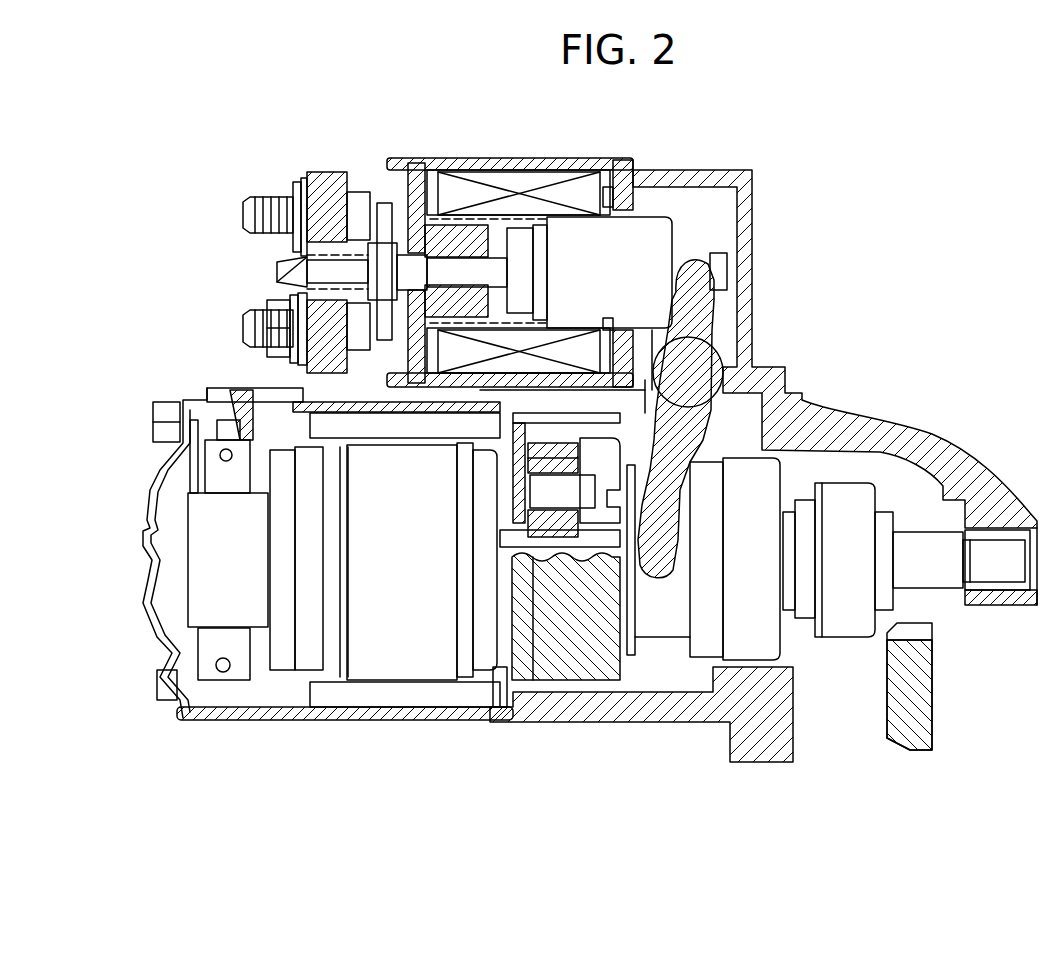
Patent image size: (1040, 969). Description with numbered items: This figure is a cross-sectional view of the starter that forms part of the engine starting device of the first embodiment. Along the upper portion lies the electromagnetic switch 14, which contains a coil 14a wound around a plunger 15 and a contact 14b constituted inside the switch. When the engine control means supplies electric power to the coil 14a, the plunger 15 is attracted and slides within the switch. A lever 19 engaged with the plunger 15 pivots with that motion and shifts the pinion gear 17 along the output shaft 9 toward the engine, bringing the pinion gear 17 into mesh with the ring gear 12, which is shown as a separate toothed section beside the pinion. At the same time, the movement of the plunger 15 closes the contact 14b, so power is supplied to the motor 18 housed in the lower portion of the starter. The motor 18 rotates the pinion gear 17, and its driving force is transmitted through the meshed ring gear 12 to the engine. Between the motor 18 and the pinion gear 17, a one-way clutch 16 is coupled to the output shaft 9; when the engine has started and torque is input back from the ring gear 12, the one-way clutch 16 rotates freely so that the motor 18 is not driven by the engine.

The output shaft 9 is at (927, 553).
The ring gear 12 is at (932, 700).
The electromagnetic switch 14 is at (593, 160).
The coil 14a is at (497, 180).
The contact 14b is at (370, 217).
The plunger 15 is at (648, 238).
The one-way clutch 16 is at (703, 608).
The pinion gear 17 is at (825, 630).
The motor 18 is at (397, 607).
The lever 19 is at (697, 358).